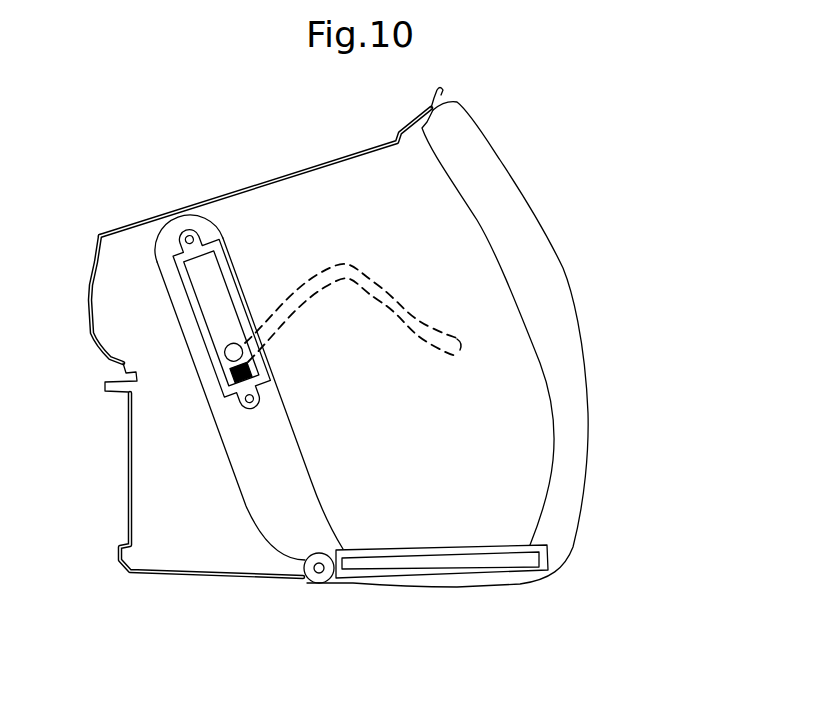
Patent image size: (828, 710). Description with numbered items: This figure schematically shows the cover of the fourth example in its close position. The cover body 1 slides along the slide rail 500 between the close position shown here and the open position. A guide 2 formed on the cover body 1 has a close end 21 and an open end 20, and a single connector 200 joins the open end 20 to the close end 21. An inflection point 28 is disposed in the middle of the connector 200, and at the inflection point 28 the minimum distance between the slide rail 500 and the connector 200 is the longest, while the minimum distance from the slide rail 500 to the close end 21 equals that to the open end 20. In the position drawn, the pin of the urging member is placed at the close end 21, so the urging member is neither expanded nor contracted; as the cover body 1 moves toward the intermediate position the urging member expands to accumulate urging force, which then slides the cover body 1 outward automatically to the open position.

The cover body 1 is at (563, 268).
The guide 2 is at (390, 311).
The open end 20 is at (465, 350).
The close end 21 is at (233, 394).
The inflection point 28 is at (337, 270).
The connector 200 is at (300, 290).
The slide rail 500 is at (412, 577).